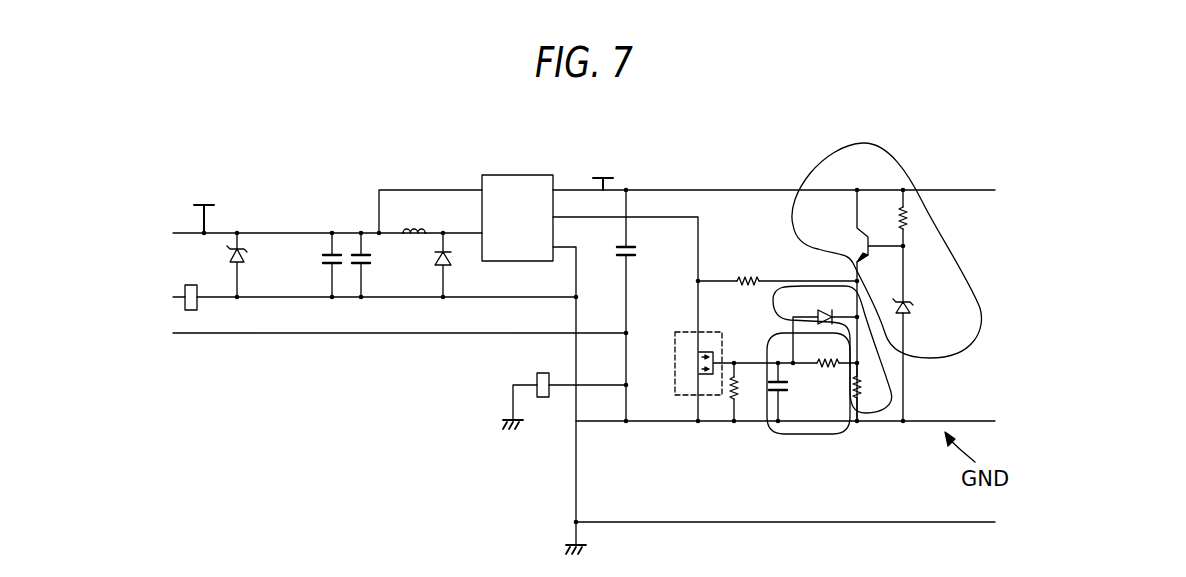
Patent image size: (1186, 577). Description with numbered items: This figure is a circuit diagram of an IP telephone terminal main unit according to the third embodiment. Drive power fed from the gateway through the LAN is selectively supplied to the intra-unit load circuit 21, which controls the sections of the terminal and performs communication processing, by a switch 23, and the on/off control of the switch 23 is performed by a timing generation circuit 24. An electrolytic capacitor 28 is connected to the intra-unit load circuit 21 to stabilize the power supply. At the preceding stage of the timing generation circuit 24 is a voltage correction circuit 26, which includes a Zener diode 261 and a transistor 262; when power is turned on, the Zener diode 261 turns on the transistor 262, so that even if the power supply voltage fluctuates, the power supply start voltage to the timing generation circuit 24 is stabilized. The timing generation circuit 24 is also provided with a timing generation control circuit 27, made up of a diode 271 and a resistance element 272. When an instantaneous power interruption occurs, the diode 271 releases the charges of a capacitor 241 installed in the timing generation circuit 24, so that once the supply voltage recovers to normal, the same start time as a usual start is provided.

The intra-unit load circuit 21 is at (500, 175).
The switch 23 is at (672, 395).
The timing generation circuit 24 is at (808, 404).
The capacitor 241 is at (788, 388).
The voltage correction circuit 26 is at (887, 283).
The Zener diode 261 is at (912, 306).
The transistor 262 is at (854, 244).
The timing generation control circuit 27 is at (799, 354).
The diode 271 is at (816, 308).
The resistance element 272 is at (862, 382).
The electrolytic capacitor 28 is at (636, 250).